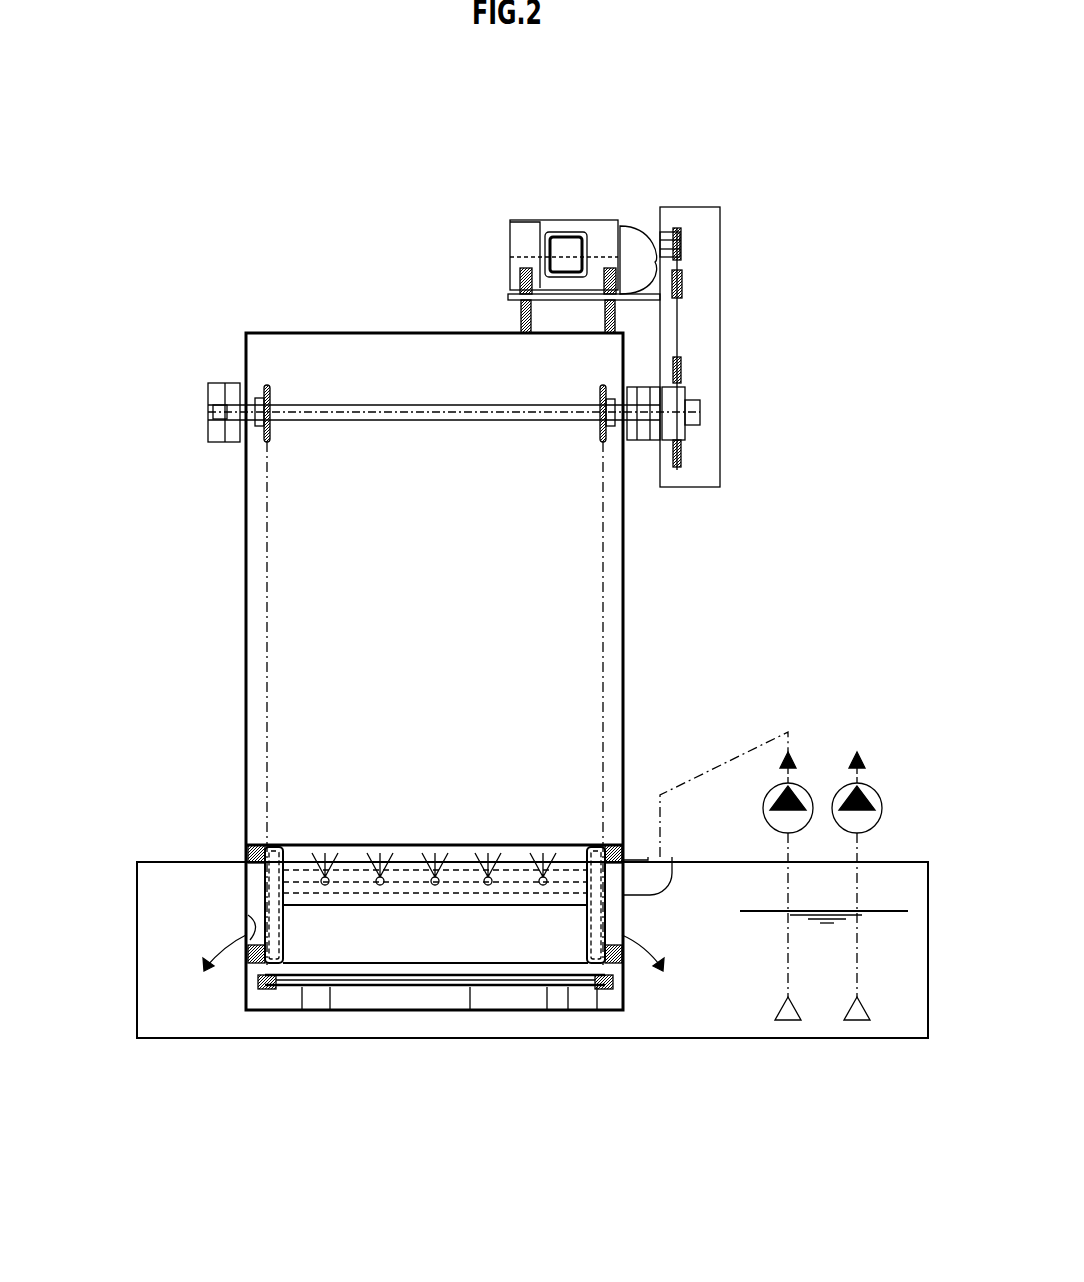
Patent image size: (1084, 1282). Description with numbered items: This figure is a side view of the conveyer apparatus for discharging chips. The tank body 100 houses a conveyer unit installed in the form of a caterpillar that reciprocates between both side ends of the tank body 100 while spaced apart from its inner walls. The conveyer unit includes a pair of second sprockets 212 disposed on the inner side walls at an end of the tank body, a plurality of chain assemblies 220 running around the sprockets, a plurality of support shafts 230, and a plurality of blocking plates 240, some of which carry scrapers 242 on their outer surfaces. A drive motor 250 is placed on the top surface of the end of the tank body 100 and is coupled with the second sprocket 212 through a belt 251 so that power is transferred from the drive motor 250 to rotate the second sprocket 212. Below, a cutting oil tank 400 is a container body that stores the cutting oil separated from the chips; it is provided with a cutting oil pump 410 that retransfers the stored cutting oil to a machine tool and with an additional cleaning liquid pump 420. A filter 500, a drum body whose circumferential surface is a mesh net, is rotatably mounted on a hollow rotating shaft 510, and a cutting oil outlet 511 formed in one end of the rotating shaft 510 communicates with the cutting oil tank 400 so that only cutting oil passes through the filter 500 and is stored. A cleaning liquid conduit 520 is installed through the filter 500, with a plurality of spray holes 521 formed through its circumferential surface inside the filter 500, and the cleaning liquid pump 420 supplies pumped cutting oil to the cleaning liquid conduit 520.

The tank body 100 is at (232, 522).
The second sprocket 212 is at (267, 385).
The chain assembly 220 is at (605, 578).
The support shaft 230 is at (470, 988).
The blocking plate 240 is at (330, 990).
The scraper 242 is at (368, 980).
The drive motor 250 is at (592, 228).
The belt 251 is at (684, 285).
The cutting oil tank 400 is at (707, 1046).
The cutting oil pump 410 is at (877, 795).
The cleaning liquid pump 420 is at (805, 790).
The filter 500 is at (355, 830).
The rotating shaft 510 is at (272, 880).
The cutting oil outlet 511 is at (245, 905).
The cleaning liquid conduit 520 is at (556, 895).
The spray hole 521 is at (478, 880).